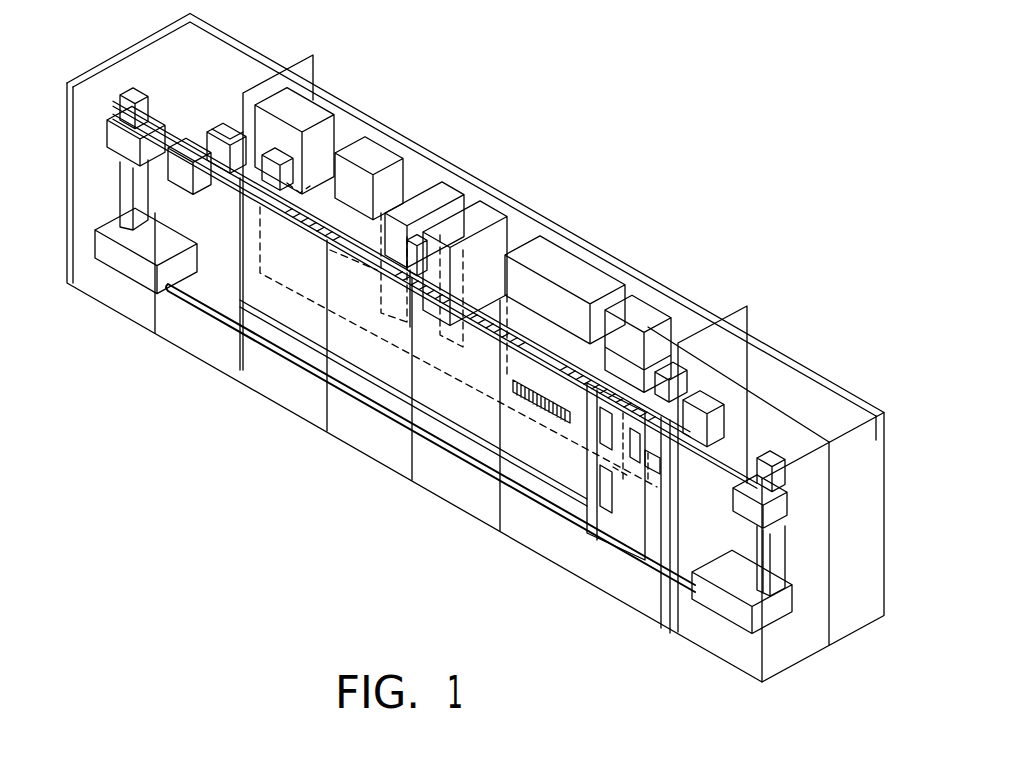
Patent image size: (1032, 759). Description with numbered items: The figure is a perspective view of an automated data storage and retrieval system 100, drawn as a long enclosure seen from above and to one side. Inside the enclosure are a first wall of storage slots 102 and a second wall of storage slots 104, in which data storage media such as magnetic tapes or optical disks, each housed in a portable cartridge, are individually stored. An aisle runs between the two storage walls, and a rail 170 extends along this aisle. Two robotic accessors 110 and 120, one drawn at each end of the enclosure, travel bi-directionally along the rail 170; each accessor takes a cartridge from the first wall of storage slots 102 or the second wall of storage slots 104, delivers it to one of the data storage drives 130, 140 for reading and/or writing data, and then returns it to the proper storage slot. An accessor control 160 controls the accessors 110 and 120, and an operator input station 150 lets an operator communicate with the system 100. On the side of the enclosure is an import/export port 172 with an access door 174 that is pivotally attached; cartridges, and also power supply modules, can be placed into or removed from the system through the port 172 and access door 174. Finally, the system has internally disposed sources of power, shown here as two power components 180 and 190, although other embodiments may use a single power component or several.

The automated data storage and retrieval system 100 is at (533, 572).
The first wall of storage slots 102 is at (312, 207).
The second wall of storage slots 104 is at (308, 325).
The accessor 110 is at (113, 147).
The accessor 120 is at (783, 501).
The data storage drive 130 is at (443, 188).
The data storage drive 140 is at (493, 213).
The operator input station 150 is at (377, 152).
The accessor control 160 is at (318, 102).
The rail 170 is at (383, 407).
The import/export port 172 is at (648, 507).
The access door 174 is at (623, 513).
The power component 180 is at (750, 397).
The power component 190 is at (683, 470).